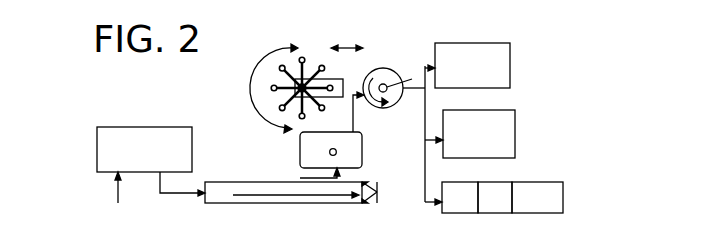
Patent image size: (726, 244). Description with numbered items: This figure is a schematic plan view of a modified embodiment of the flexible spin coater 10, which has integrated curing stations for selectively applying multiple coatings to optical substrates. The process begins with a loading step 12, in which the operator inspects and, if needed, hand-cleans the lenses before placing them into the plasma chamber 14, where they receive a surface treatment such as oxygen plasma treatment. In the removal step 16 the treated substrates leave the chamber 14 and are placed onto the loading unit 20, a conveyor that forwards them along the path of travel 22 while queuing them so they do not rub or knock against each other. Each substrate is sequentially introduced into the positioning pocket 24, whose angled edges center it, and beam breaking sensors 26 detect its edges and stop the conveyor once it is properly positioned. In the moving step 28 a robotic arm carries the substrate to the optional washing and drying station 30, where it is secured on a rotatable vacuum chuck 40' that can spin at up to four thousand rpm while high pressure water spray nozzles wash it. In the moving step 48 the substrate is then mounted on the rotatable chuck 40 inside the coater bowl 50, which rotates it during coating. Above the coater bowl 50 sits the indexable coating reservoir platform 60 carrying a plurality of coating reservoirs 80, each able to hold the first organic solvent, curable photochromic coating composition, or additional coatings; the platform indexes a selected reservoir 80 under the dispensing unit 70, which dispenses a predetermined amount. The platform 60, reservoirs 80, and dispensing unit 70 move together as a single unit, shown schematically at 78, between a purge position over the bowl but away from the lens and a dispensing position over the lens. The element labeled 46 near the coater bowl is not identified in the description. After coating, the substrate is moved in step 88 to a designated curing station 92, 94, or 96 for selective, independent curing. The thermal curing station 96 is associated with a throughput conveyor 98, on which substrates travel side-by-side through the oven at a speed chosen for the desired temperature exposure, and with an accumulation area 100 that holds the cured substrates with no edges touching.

The spin coater 10 is at (184, 103).
The loading step 12 is at (117, 189).
The plasma chamber 14 is at (124, 157).
The removal step 16 is at (178, 194).
The loading unit 20 is at (217, 181).
The path of travel 22 is at (252, 193).
The positioning pocket 24 is at (380, 183).
The beam breaking sensors 26 is at (383, 205).
The moving step 28 is at (300, 178).
The washing and drying station 30 is at (302, 158).
The rotatable chuck 40 is at (401, 66).
The rotatable chuck 40' is at (366, 162).
The rotation direction 46 is at (391, 104).
The moving step 48 is at (355, 118).
The coater bowl 50 is at (382, 68).
The indexable coating reservoir platform 60 is at (290, 117).
The dispensing unit 70 is at (345, 84).
The unit movement 78 is at (350, 47).
The coating reservoirs 80 is at (306, 58).
The moving step 88 is at (426, 103).
The curing station 92 is at (454, 74).
The curing station 94 is at (462, 145).
The thermal curing station 96 is at (484, 210).
The throughput conveyor 98 is at (449, 210).
The accumulation area 100 is at (521, 210).